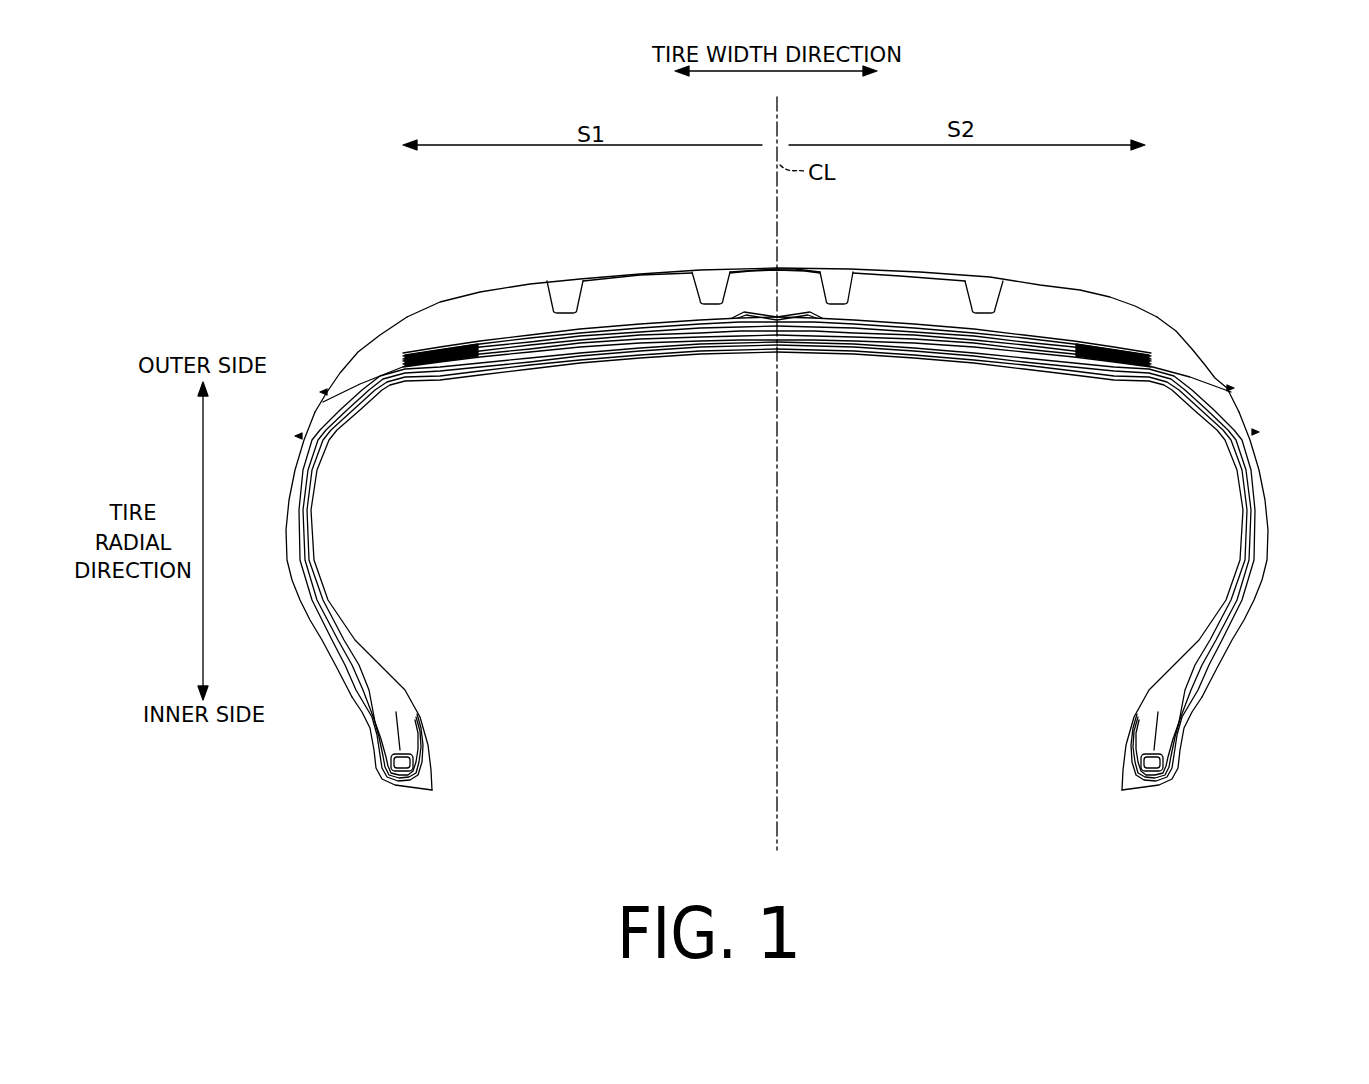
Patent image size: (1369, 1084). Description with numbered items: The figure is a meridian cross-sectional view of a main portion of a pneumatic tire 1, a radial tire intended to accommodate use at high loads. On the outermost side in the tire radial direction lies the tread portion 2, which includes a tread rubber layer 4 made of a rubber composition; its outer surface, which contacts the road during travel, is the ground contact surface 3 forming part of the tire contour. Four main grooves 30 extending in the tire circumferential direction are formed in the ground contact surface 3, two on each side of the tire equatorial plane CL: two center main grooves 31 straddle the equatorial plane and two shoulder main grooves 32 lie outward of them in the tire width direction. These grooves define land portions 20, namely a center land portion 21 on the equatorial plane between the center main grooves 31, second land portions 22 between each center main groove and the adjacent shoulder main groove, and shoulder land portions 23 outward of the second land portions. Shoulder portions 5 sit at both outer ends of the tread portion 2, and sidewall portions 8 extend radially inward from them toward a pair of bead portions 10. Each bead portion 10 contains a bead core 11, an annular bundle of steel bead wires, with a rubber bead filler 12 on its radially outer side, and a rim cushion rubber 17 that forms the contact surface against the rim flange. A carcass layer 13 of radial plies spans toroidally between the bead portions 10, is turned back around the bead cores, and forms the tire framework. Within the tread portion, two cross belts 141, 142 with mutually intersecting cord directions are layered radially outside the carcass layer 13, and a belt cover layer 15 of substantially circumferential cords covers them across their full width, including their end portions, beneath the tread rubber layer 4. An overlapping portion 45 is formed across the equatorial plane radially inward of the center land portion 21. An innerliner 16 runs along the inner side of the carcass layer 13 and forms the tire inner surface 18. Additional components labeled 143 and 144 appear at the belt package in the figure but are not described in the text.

The pneumatic tire 1 is at (785, 493).
The tread portion 2 is at (777, 298).
The ground contact surface 3 is at (1074, 291).
The tread rubber layer 4 is at (620, 292).
The shoulder portion 5 is at (402, 317).
The sidewall portion 8 is at (286, 508).
The bead portion 10 is at (784, 765).
The bead core 11 is at (403, 775).
The bead filler 12 is at (412, 714).
The carcass layer 13 is at (1162, 390).
The belt cover layer 15 is at (781, 329).
The innerliner 16 is at (1232, 458).
The rim cushion rubber 17 is at (362, 712).
The tire inner surface 18 is at (822, 337).
The land portions 20 is at (774, 235).
The center land portion 21 is at (752, 268).
The second land portion 22 is at (650, 272).
The shoulder land portion 23 is at (518, 282).
The main grooves 30 is at (776, 245).
The center main groove 31 is at (706, 288).
The shoulder main groove 32 is at (563, 292).
The overlapping portion 45 is at (792, 307).
The belt 141 is at (986, 340).
The belt 142 is at (885, 340).
The belt ply 143 is at (777, 351).
The belt edge cushion 144 is at (408, 358).